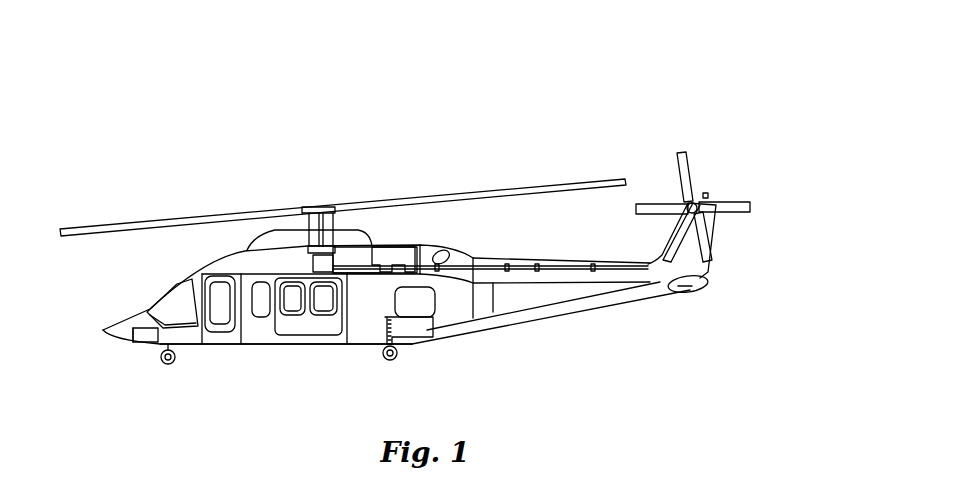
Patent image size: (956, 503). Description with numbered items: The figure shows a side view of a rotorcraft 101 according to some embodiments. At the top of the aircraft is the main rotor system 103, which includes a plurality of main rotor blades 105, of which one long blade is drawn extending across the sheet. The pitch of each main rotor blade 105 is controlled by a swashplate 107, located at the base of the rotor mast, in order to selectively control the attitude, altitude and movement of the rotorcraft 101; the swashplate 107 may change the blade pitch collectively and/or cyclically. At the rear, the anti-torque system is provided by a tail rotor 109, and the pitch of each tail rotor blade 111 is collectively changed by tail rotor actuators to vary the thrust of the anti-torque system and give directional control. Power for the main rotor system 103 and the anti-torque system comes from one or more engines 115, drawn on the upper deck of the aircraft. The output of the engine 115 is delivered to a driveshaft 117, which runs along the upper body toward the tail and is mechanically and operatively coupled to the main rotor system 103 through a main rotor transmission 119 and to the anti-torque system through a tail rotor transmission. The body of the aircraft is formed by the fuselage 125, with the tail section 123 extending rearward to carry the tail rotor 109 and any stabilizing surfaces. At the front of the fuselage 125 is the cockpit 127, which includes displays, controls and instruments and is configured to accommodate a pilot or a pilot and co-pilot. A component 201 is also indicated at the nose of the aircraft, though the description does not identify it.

The rotorcraft 101 is at (182, 30).
The main rotor system 103 is at (335, 187).
The main rotor blades 105 is at (532, 184).
The swashplate 107 is at (334, 247).
The tail rotor 109 is at (696, 140).
The tail rotor blade 111 is at (743, 202).
The engines 115 is at (403, 247).
The driveshaft 117 is at (357, 274).
The main rotor transmission 119 is at (312, 266).
The tail section 123 is at (567, 313).
The fuselage 125 is at (281, 346).
The cockpit 127 is at (155, 300).
The flight control computer 201 is at (132, 334).